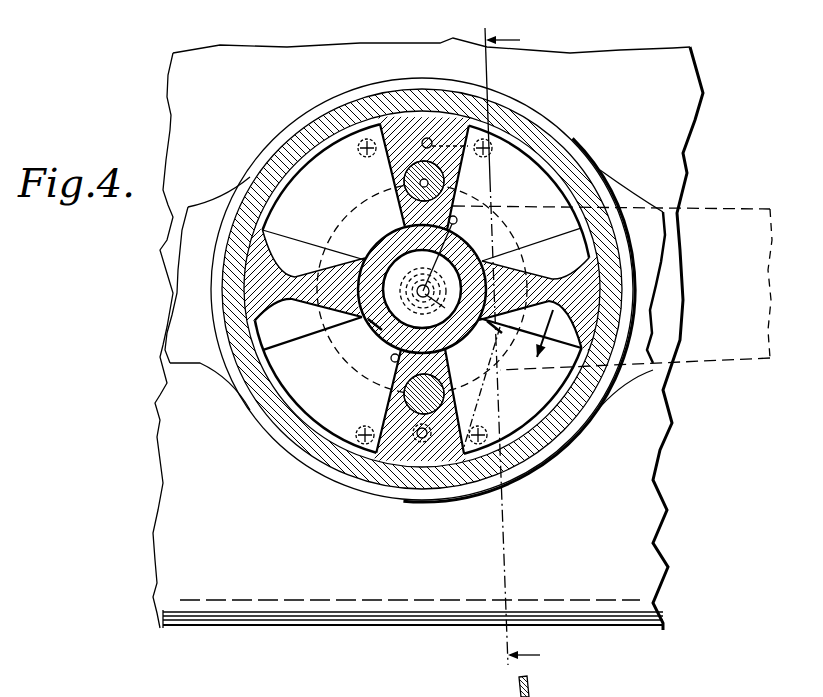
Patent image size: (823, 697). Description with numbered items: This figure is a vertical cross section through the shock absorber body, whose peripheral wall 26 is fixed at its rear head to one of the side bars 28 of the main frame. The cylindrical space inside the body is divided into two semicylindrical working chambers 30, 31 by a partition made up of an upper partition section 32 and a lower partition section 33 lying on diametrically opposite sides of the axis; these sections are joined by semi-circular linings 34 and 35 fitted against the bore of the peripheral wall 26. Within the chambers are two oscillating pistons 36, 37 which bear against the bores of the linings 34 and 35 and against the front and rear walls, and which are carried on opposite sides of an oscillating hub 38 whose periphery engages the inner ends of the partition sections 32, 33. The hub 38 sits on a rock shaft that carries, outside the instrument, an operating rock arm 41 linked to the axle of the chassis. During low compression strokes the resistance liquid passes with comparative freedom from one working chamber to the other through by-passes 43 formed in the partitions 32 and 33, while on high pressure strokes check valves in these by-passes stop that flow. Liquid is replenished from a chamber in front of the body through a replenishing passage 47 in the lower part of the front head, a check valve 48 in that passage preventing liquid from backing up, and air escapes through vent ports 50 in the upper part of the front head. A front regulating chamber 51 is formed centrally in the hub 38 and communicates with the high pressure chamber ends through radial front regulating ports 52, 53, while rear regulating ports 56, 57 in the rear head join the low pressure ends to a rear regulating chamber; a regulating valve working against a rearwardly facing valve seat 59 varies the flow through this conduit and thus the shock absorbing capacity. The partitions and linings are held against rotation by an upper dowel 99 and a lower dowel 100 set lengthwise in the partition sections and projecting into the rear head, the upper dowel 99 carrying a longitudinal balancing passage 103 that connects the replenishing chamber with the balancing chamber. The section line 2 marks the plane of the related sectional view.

The section line 2- 2 is at (508, 354).
The peripheral wall 26 is at (582, 184).
The side bar 28 is at (162, 419).
The working chamber 30 is at (322, 192).
The working chamber 31 is at (422, 289).
The upper partition section 32 is at (400, 112).
The lower partition section 33 is at (386, 462).
The semi-circular lining 34 is at (277, 393).
The semi-circular lining 35 is at (593, 410).
The oscillating piston 36 is at (308, 324).
The oscillating piston 37 is at (530, 288).
The oscillating hub 38 is at (375, 330).
The operating rock arm 41 is at (616, 285).
The by-pass 43 is at (429, 138).
The replenishing passage 47 is at (358, 430).
The check valve 48 is at (485, 432).
The vent port 50 is at (364, 140).
The front regulating chamber 51 is at (431, 305).
The front regulating port 52 is at (375, 260).
The front regulating port 53 is at (497, 337).
The rear regulating port 56 is at (456, 217).
The rear regulating port 57 is at (391, 360).
The valve seat 59 is at (420, 288).
The upper dowel 99 is at (404, 182).
The lower dowel 100 is at (448, 464).
The balancing passage 103 is at (408, 196).